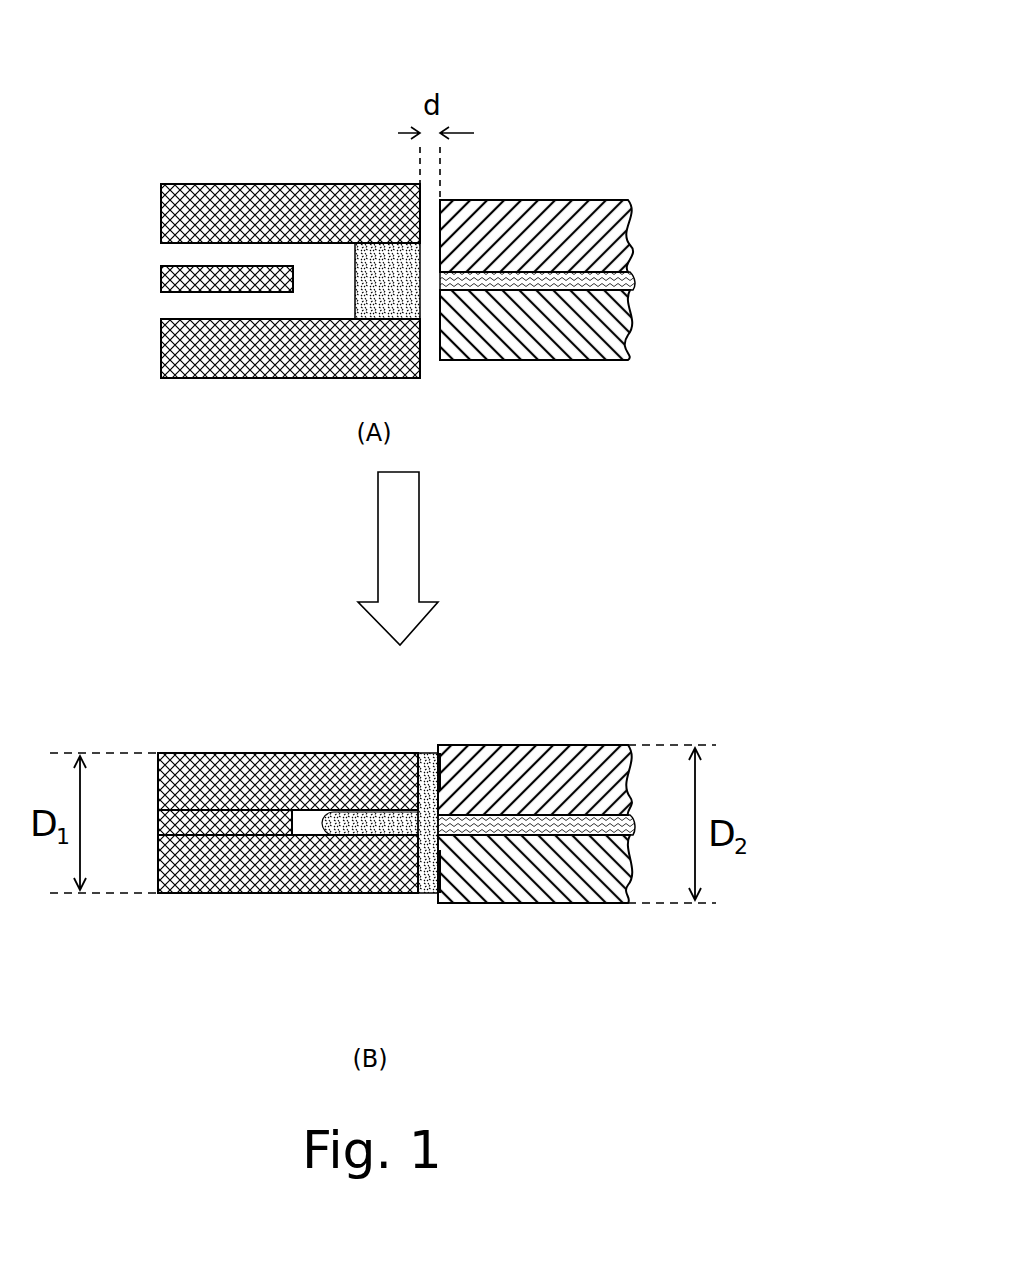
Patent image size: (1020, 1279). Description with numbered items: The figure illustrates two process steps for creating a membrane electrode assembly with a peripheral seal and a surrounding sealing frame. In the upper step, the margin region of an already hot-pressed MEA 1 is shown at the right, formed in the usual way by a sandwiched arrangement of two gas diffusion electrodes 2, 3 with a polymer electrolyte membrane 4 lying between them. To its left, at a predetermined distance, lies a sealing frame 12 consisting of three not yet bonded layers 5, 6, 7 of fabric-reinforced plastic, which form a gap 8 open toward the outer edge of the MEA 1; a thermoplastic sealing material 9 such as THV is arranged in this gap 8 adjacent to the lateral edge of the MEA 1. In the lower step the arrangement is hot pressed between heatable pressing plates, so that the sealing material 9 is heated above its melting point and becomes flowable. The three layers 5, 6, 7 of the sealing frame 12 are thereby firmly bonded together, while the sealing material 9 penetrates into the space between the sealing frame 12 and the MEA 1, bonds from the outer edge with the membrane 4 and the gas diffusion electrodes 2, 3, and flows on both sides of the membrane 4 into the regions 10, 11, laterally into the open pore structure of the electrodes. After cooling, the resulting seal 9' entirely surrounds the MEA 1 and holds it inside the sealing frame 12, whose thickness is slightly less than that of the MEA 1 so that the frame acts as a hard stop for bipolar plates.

The MEA 1 is at (634, 531).
The gas diffusion electrode 2 is at (620, 210).
The gas diffusion electrode 3 is at (605, 337).
The membrane 4 is at (627, 275).
The layer 5 is at (172, 213).
The layer 6 is at (178, 276).
The layer 7 is at (178, 342).
The gap 8 is at (312, 275).
The sealing material 9 is at (356, 196).
The seal 9' is at (383, 779).
The region 10 is at (457, 782).
The region 11 is at (452, 868).
The sealing frame 12 is at (255, 505).